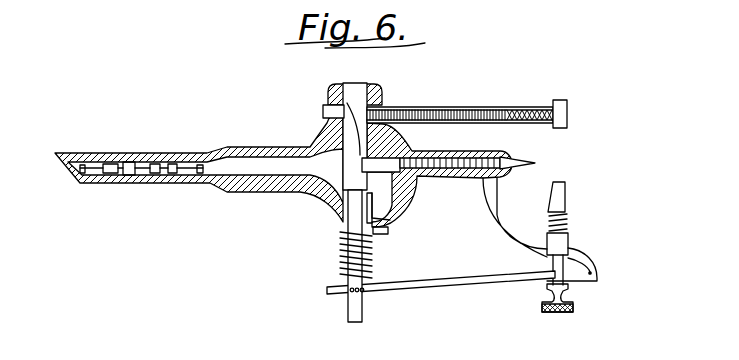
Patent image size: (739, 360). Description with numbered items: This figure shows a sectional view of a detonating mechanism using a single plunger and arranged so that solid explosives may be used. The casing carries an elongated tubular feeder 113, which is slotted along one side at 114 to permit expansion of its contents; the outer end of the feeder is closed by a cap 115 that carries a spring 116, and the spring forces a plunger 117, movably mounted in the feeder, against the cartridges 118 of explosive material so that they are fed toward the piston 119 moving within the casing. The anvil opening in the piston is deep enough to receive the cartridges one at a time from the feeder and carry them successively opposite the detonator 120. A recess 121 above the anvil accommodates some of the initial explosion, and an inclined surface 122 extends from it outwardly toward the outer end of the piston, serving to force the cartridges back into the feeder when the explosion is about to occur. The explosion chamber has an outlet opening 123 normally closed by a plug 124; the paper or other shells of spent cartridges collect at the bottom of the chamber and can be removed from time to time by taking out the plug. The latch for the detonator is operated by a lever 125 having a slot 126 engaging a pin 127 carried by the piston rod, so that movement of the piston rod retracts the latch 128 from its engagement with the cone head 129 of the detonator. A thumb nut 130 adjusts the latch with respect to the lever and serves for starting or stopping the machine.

The tubular feeder 113 is at (447, 128).
The slot 114 is at (438, 105).
The cap 115 is at (568, 120).
The spring 116 is at (546, 126).
The plunger 117 is at (507, 108).
The cartridges 118 is at (494, 124).
The piston 119 is at (356, 98).
The detonator 120 is at (398, 180).
The recess 121 is at (352, 155).
The inclined surface 122 is at (347, 103).
The outlet opening 123 is at (395, 208).
The plug 124 is at (384, 236).
The lever 125 is at (441, 290).
The slot 126 is at (350, 291).
The pin 127 is at (358, 293).
The latch 128 is at (565, 200).
The cone head 129 is at (537, 163).
The thumb nut 130 is at (560, 314).